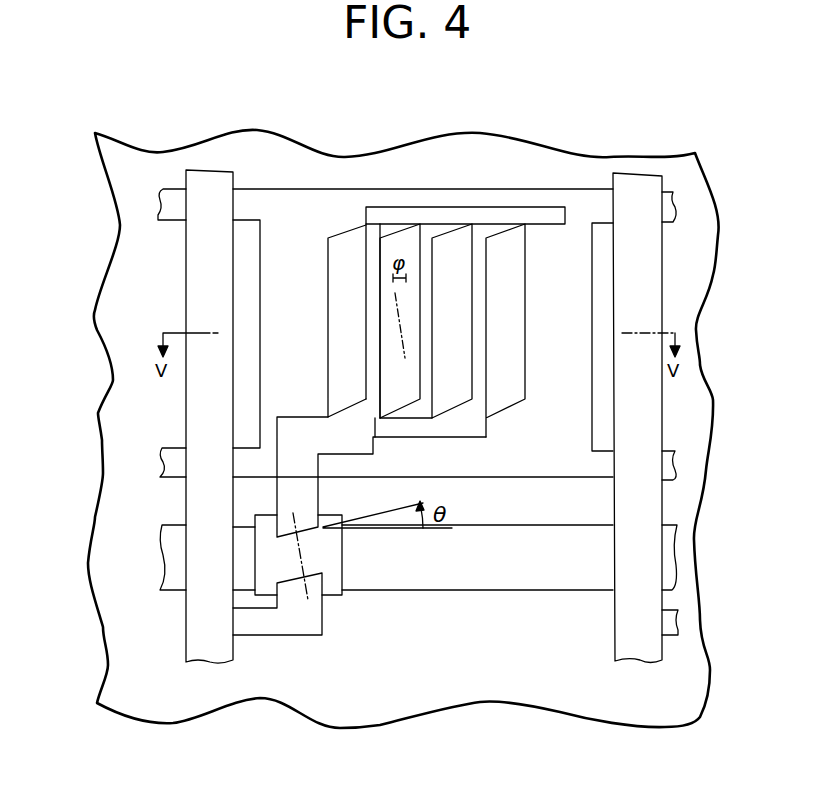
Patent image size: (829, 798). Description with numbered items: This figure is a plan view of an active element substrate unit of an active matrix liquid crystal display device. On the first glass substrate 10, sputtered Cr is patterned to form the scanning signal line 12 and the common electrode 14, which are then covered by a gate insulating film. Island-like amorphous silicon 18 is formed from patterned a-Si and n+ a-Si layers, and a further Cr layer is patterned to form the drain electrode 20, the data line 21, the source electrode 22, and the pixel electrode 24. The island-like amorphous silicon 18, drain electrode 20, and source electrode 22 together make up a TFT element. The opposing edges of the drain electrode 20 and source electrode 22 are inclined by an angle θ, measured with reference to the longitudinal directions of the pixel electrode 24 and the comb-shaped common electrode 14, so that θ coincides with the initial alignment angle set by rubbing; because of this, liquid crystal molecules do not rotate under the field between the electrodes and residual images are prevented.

The first glass substrate 10 is at (697, 388).
The scanning signal line 12 is at (180, 562).
The common electrode 14 is at (160, 456).
The island-like amorphous silicon 18 is at (330, 557).
The drain electrode 20 is at (298, 625).
The data line 21 is at (197, 308).
The source electrode 22 is at (288, 507).
The pixel electrode 24 is at (477, 277).